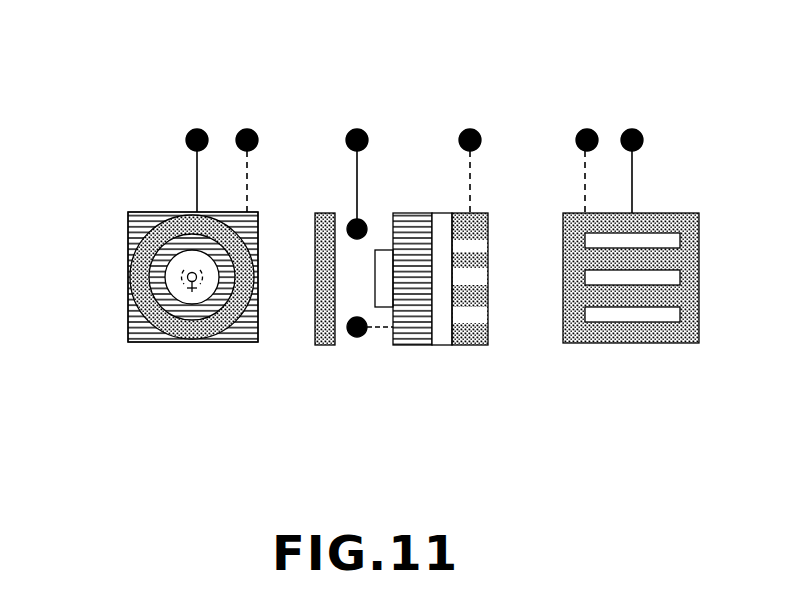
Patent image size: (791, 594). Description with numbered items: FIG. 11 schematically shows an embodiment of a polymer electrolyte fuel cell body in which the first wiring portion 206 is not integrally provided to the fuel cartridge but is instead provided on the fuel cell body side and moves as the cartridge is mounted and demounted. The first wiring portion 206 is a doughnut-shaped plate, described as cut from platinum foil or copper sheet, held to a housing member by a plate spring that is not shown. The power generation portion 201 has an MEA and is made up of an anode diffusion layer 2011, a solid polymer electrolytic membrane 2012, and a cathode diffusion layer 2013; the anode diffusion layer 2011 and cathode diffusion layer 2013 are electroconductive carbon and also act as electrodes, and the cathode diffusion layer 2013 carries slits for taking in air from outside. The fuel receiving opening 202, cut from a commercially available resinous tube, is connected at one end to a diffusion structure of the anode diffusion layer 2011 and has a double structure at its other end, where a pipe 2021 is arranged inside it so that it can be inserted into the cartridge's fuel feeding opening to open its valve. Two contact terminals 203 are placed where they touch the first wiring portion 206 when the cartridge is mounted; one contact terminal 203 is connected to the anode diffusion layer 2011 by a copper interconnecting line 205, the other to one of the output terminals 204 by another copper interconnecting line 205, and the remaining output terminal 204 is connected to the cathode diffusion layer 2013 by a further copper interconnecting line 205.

The power generation portion 201 is at (464, 363).
The anode diffusion layer 2011 is at (230, 343).
The solid polymer electrolytic membrane 2012 is at (438, 346).
The cathode diffusion layer 2013 is at (575, 331).
The fuel receiving opening 202 is at (382, 250).
The pipe 2021 is at (190, 284).
The contact terminals 203 is at (351, 220).
The output terminals 204 is at (632, 129).
The copper interconnecting line 205 is at (248, 192).
The first wiring portion 206 is at (316, 308).